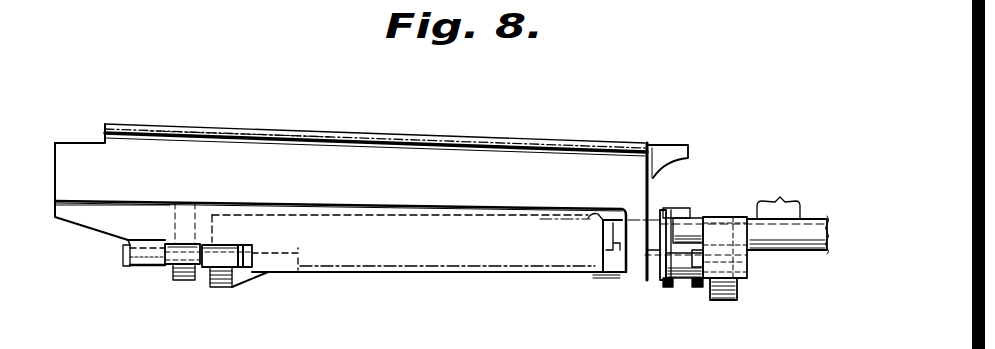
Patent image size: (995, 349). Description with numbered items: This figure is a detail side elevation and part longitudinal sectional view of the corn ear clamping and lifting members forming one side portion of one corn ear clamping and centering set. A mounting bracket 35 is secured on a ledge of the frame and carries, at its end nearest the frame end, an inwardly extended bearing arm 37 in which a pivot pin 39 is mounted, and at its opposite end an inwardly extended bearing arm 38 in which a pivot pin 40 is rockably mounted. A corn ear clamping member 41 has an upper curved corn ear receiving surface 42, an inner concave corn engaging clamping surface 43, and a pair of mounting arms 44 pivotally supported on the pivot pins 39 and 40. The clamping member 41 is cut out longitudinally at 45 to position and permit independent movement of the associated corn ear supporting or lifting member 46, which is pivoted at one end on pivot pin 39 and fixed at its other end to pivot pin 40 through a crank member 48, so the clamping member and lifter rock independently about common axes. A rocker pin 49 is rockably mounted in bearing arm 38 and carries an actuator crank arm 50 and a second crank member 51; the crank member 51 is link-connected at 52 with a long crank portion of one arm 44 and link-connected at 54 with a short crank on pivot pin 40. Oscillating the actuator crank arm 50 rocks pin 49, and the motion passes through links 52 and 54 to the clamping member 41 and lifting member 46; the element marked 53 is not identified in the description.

The mounting bracket 35 is at (617, 228).
The bearing arm 37 is at (243, 247).
The bearing arm 38 is at (723, 298).
The pivot pin 39 is at (123, 266).
The pivot pin 40 is at (748, 272).
The corn ear clamping member 41 is at (338, 152).
The upper curved corn ear receiving surface 42 is at (560, 128).
The inner concave corn engaging clamping surface 43 is at (428, 174).
The mounting arm 44 is at (182, 266).
The longitudinal cut-out 45 is at (308, 189).
The corn ear supporting or lifting member 46 is at (362, 244).
The crank member 48 is at (600, 237).
The rocker pin 49 is at (720, 237).
The actuator crank arm 50 is at (780, 206).
The second crank member 51 is at (690, 208).
The link 52 is at (668, 280).
The support block 53 is at (650, 257).
The link 54 is at (695, 286).